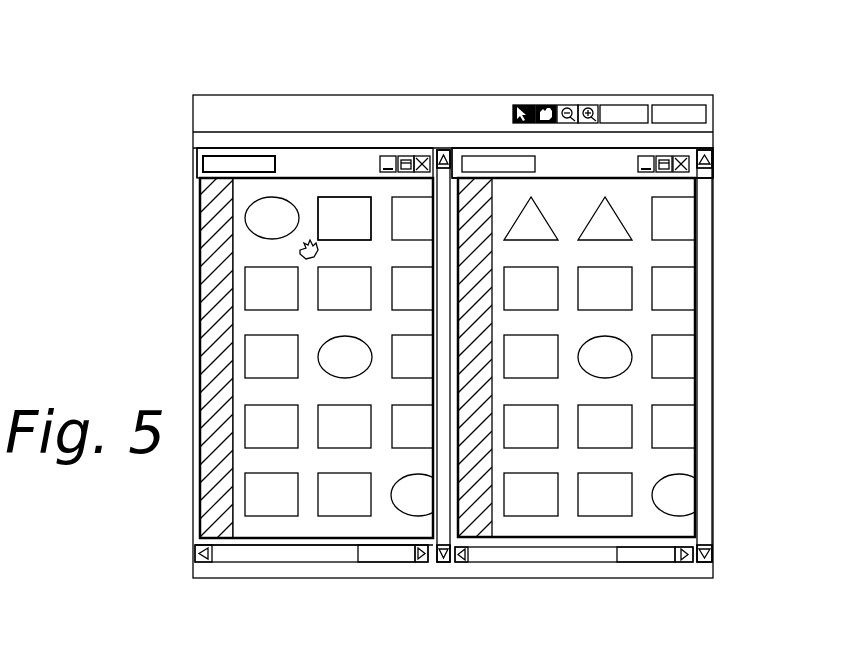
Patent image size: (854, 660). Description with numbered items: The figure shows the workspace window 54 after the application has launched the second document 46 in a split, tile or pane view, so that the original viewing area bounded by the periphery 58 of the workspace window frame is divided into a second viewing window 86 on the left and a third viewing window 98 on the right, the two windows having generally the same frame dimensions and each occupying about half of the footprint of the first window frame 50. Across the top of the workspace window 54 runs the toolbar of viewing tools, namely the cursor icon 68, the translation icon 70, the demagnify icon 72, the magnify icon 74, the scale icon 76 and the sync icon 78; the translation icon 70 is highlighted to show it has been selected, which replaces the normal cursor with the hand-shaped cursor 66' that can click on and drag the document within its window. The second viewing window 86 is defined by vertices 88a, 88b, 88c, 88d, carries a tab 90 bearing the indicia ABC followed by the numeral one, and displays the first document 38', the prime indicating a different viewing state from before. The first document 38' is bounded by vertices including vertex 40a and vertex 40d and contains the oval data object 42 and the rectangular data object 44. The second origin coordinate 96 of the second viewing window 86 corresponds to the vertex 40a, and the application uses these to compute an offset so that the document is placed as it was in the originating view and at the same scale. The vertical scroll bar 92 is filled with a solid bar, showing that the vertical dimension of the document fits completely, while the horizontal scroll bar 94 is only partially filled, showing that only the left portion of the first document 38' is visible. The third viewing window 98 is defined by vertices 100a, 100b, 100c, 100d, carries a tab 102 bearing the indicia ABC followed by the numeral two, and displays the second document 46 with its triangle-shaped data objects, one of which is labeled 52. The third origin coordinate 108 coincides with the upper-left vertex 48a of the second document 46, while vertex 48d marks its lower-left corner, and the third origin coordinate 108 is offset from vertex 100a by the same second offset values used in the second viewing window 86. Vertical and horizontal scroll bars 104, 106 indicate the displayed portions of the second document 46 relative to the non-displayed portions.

The first document 38' is at (291, 358).
The vertex 40a is at (233, 180).
The second origin coordinate 96 is at (216, 358).
The vertex 40d is at (233, 512).
The data object 42 is at (277, 198).
The data object 44 is at (357, 237).
The second document 46 is at (682, 321).
The vertex 48a is at (494, 172).
The third origin coordinate 108 is at (582, 163).
The vertex 48d is at (497, 538).
The first window frame 50 is at (538, 218).
The triangular object 52 is at (612, 218).
The workspace window 54 is at (317, 103).
The periphery 58 is at (199, 232).
The cursor 66' is at (283, 249).
The cursor icon 68 is at (527, 105).
The translation icon 70 is at (548, 105).
The demagnify icon 72 is at (570, 105).
The magnify icon 74 is at (590, 105).
The scale icon 76 is at (640, 105).
The sync icon 78 is at (677, 105).
The second viewing window 86 is at (300, 162).
The vertex 88a is at (198, 176).
The vertex 88b is at (432, 152).
The vertex 88c is at (418, 538).
The vertex 88d is at (200, 542).
The tab 90 is at (220, 158).
The vertical scroll bar 92 is at (437, 462).
The horizontal scroll bar 94 is at (305, 560).
The third viewing window 98 is at (608, 165).
The vertex 100a is at (452, 148).
The vertex 100b is at (713, 180).
The vertex 100c is at (713, 544).
The vertex 100d is at (452, 563).
The tab 102 is at (508, 156).
The vertical scroll bar 104 is at (713, 250).
The horizontal scroll bar 106 is at (590, 556).